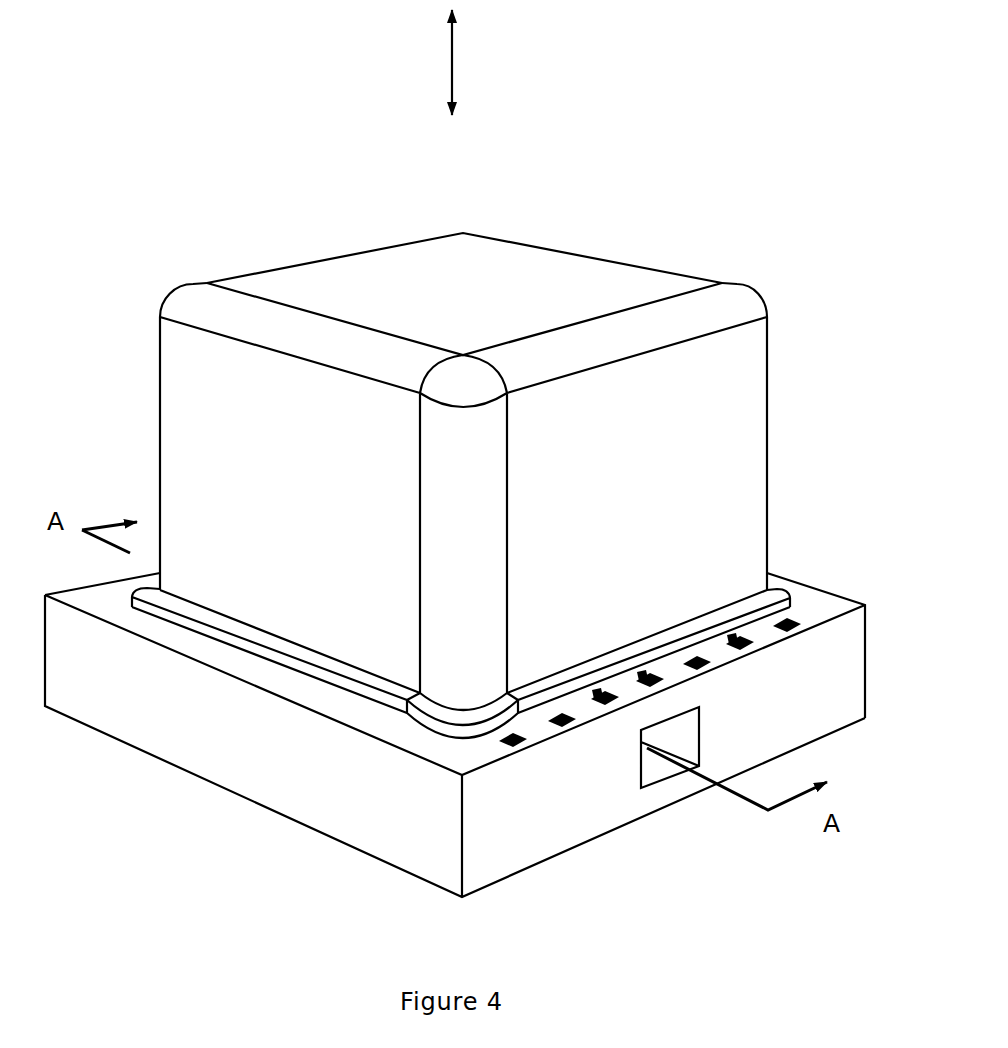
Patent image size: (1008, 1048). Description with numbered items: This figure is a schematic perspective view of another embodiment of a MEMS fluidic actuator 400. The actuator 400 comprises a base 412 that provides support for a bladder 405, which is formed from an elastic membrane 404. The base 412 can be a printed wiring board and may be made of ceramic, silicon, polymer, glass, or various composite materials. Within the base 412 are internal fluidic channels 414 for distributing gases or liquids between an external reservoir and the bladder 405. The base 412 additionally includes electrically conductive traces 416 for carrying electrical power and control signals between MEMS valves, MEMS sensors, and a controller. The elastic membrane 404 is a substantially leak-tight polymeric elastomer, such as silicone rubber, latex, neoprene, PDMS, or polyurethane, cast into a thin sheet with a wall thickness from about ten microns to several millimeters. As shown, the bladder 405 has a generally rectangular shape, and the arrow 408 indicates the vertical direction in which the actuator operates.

The MEMS fluidic actuator 400 is at (464, 453).
The elastic membrane 404 is at (496, 485).
The bladder 405 is at (464, 294).
The vertical axis direction arrow 408 is at (437, 70).
The base 412 is at (455, 735).
The internal fluidic channels 414 is at (660, 735).
The electrically conductive traces 416 is at (790, 625).